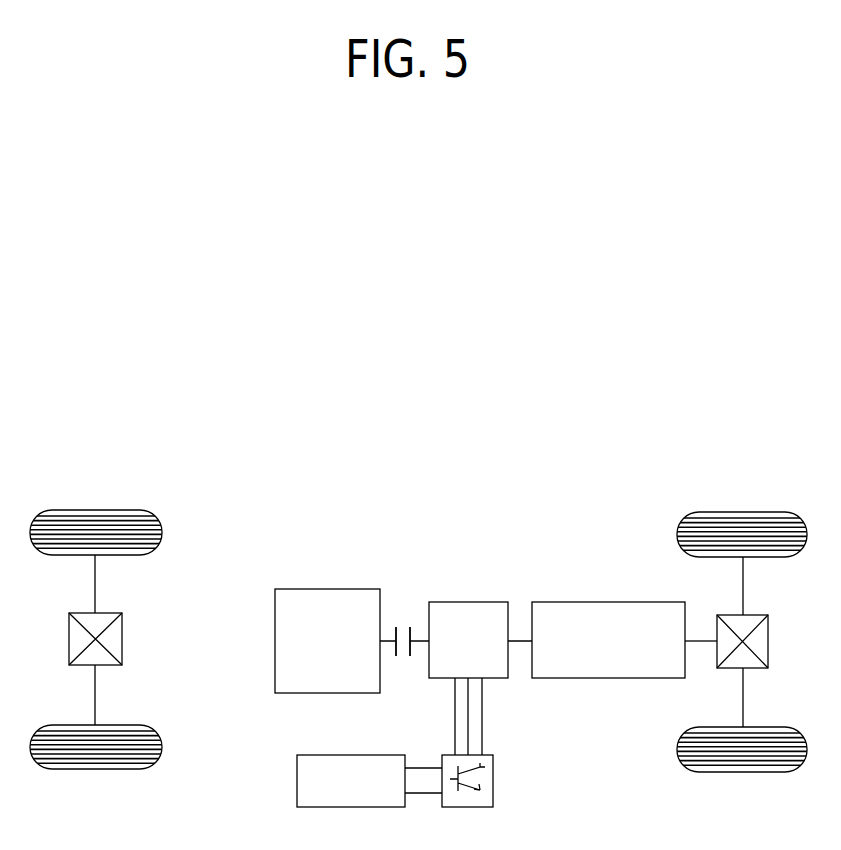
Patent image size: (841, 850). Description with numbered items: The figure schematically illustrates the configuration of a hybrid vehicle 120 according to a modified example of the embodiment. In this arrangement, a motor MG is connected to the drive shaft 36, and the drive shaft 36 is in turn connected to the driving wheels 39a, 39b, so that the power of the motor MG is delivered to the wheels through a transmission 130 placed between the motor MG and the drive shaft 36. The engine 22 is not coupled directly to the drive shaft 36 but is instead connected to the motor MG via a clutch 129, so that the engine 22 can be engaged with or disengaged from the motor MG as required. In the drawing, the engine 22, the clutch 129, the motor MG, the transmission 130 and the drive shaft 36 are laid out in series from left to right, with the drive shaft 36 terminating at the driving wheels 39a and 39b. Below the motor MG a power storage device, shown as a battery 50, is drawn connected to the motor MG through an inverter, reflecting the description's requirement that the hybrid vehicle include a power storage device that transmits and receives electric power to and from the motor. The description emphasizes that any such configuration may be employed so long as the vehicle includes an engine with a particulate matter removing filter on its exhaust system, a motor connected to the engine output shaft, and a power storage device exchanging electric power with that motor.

The hybrid vehicle 120 is at (621, 499).
The engine 22 is at (327, 588).
The clutch 129 is at (403, 625).
The motor MG is at (468, 600).
The transmission 130 is at (612, 600).
The drive shaft 36 is at (697, 636).
The driving wheel 39a is at (741, 510).
The driving wheel 39b is at (743, 774).
The battery 50 is at (364, 753).